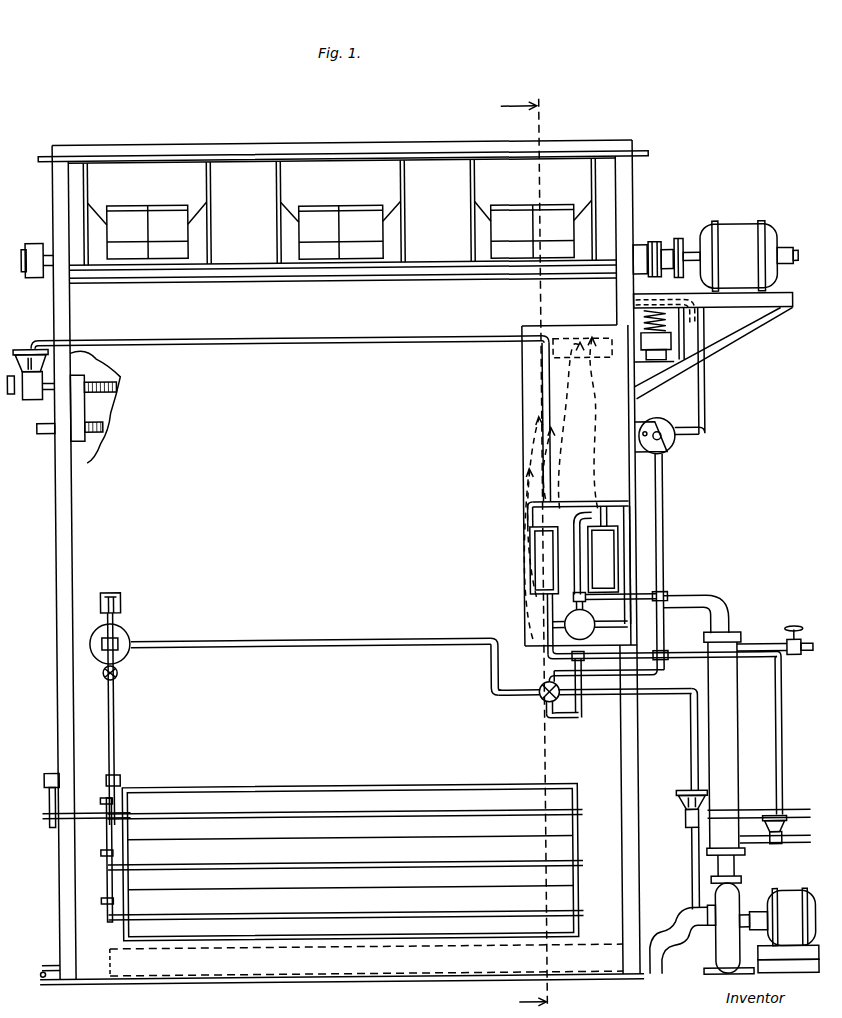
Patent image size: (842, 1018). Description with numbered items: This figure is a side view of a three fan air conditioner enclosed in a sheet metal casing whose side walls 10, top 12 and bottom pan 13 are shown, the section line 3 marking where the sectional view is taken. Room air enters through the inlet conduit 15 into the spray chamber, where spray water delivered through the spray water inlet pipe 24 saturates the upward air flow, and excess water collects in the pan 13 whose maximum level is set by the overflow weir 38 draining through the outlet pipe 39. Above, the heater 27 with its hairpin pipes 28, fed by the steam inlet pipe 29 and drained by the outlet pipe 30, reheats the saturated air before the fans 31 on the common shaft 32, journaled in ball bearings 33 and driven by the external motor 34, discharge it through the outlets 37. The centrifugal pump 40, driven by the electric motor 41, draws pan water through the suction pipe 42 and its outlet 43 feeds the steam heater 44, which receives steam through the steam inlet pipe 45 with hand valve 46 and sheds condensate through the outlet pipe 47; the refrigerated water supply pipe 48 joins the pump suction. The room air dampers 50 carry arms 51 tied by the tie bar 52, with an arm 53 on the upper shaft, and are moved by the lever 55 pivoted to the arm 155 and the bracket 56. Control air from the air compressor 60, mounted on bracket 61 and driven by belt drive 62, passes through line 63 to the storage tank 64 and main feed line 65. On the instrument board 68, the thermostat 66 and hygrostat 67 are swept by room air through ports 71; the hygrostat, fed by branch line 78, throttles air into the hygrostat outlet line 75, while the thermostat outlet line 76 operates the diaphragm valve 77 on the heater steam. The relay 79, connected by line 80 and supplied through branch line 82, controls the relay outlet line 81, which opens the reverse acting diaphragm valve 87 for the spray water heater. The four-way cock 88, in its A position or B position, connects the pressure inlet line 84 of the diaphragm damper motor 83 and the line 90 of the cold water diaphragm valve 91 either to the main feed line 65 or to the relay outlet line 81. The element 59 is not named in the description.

The section line 3- 3 is at (533, 548).
The side walls 10 is at (302, 492).
The top 12 is at (298, 142).
The pan 13 is at (230, 980).
The inlet conduit 15 is at (310, 786).
The spray water inlet pipe 24 is at (704, 598).
The heater 27 is at (88, 442).
The hairpin pipes 28 is at (118, 384).
The steam inlet pipe 29 is at (50, 388).
The outlet pipe 30 is at (44, 430).
The fans 31 is at (152, 206).
The shaft 32 is at (794, 252).
The ball bearings 33 is at (40, 226).
The motor 34 is at (705, 256).
The outlets 37 is at (474, 208).
The overflow weir 38 is at (112, 961).
The outlet pipe 39 is at (42, 978).
The centrifugal pump 40 is at (712, 954).
The electric motor 41 is at (779, 930).
The suction pipe 42 is at (652, 976).
The outlet 43 is at (732, 870).
The steam heater 44 is at (724, 743).
The steam inlet pipe 45 is at (750, 646).
The hand valve 46 is at (793, 629).
The outlet pipe 47 is at (798, 846).
The refrigerated water supply pipe 48 is at (689, 885).
The dampers 50 is at (316, 899).
The arm 51 is at (110, 910).
The tie bar 52 is at (110, 882).
The arm 53 is at (50, 817).
The lever 55 is at (114, 737).
The bracket 56 is at (120, 594).
The bearing 59 is at (50, 770).
The air compressor 60 is at (656, 366).
The bracket 61 is at (656, 380).
The belt drive 62 is at (670, 326).
The line 63 is at (707, 371).
The storage tank 64 is at (678, 448).
The main feed line 65 is at (664, 511).
The thermostat 66 is at (530, 536).
The hygrostat 67 is at (620, 553).
The instrument board 68 is at (524, 405).
The ports 71 is at (530, 554).
The hygrostat outlet line 75 is at (560, 496).
The thermostat outlet line 76 is at (288, 344).
The diaphragm valve 77 is at (33, 345).
The branch line 78 is at (601, 555).
The relay 79 is at (591, 573).
The line 80 is at (614, 617).
The relay outlet line 81 is at (774, 705).
The branch line 82 is at (540, 606).
The diaphragm damper motor 83 is at (128, 634).
The pressure inlet line 84 is at (324, 646).
The reverse acting diaphragm valve 87 is at (786, 816).
The four-way cock 88 is at (540, 702).
The line 90 is at (654, 698).
The diaphragm valve 91 is at (682, 794).
The arm 155 is at (120, 780).
The A position A is at (624, 682).
The B position B is at (518, 684).